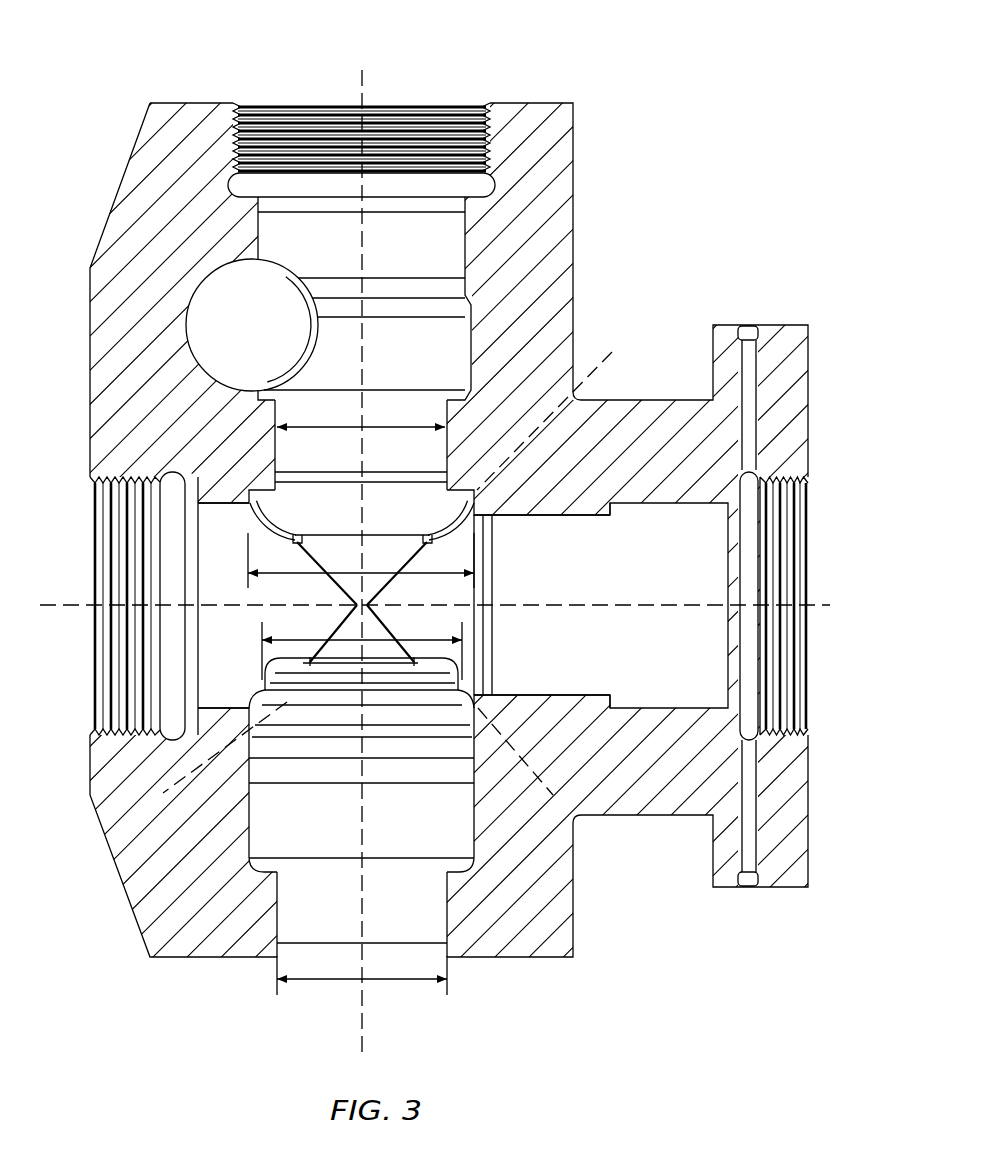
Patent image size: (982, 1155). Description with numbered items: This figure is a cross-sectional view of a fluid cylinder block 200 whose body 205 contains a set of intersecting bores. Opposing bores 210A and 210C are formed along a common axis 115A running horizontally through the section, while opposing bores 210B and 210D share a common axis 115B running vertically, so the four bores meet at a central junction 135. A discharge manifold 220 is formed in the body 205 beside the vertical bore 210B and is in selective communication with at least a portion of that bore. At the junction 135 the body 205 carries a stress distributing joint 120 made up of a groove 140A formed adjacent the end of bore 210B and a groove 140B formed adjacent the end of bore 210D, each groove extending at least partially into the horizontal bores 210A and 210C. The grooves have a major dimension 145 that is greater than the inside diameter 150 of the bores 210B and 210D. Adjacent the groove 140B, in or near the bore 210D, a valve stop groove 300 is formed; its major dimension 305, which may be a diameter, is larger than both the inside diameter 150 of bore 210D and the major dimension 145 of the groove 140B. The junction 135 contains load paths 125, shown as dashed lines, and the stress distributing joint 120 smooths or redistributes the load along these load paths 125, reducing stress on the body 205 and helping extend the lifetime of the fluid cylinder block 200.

The fluid cylinder block 200 is at (713, 73).
The body 205 is at (491, 577).
The discharge manifold 220 is at (205, 325).
The inside diameter 150 is at (415, 424).
The bore 210B is at (397, 458).
The groove 140A is at (437, 510).
The stress distributing joint 120 is at (498, 493).
The major dimension 145 is at (367, 572).
The bore 210A is at (579, 561).
The junction 135 is at (447, 597).
The major dimension 305 is at (373, 637).
The valve stop groove 300 is at (460, 668).
The bore 210C is at (252, 679).
The load paths 125 is at (552, 793).
The groove 140B is at (335, 746).
The bore 210D is at (435, 922).
The common axis 115B is at (362, 1018).
The common axis 115A is at (833, 605).